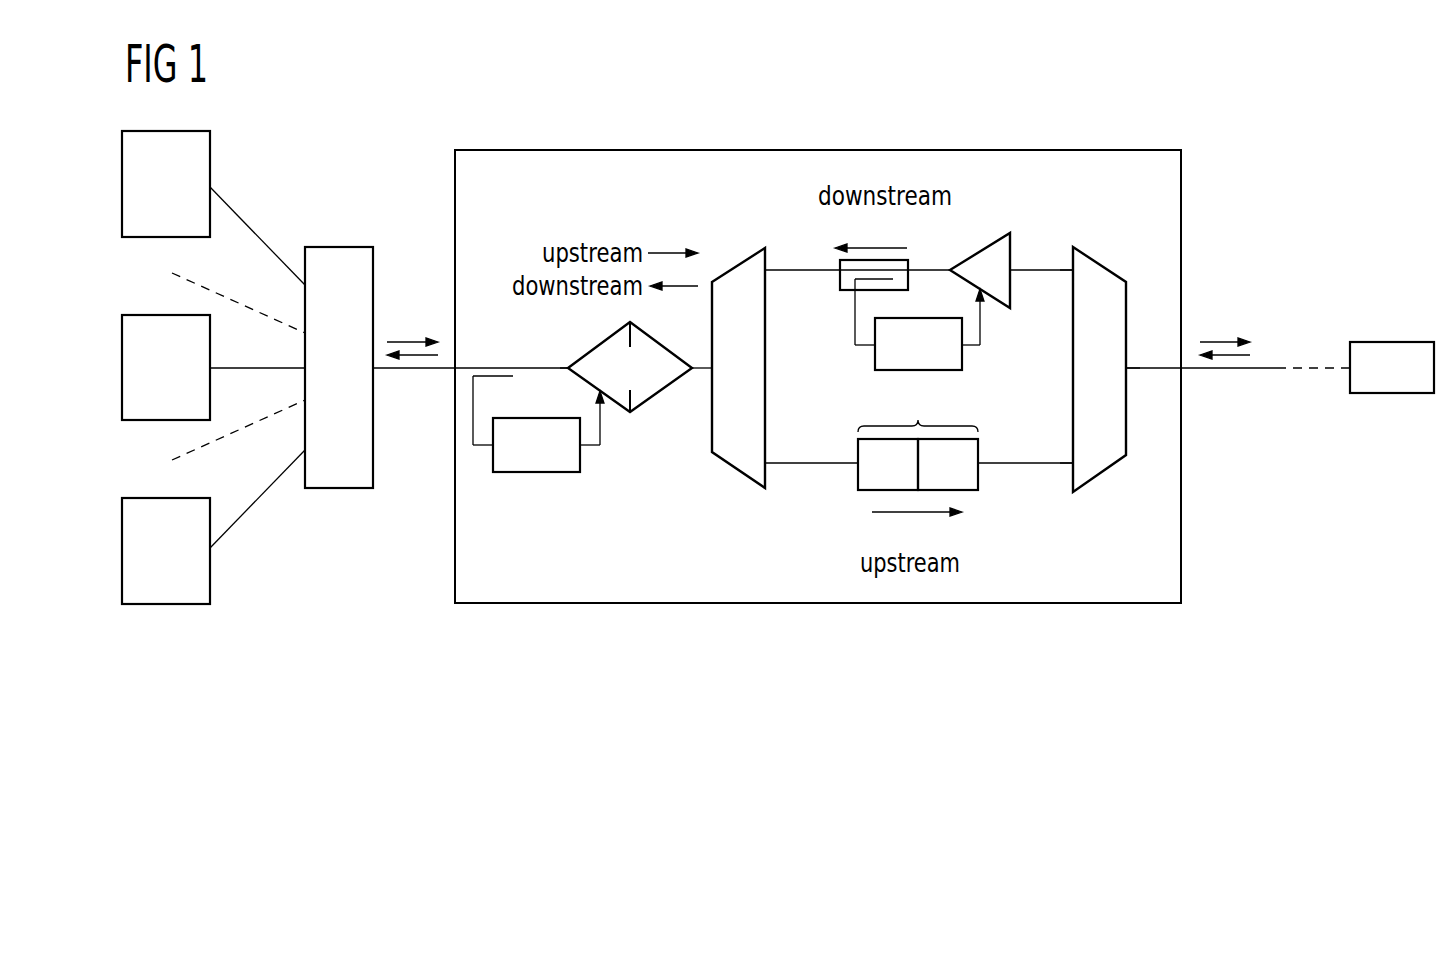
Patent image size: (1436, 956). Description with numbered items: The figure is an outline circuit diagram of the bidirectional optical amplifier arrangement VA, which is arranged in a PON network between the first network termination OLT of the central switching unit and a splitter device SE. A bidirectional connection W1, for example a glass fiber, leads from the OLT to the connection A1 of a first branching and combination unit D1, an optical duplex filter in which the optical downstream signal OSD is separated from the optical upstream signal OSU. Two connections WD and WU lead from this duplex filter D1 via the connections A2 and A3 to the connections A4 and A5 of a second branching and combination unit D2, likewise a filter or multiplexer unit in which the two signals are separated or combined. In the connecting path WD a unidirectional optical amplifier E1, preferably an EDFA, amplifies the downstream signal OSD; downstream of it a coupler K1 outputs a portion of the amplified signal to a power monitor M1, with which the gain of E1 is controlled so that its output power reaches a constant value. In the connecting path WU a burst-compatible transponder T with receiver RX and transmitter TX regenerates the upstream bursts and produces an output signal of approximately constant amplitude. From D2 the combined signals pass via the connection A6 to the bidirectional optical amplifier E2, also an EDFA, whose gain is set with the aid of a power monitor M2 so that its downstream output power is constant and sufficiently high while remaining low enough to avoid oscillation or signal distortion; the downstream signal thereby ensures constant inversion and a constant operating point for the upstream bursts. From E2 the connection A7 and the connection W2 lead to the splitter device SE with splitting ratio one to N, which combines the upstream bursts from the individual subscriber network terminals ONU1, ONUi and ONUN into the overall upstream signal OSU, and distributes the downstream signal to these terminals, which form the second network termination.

The bidirectional optical amplifier arrangement VA is at (818, 604).
The network terminal of first subscriber ONU1 is at (213, 208).
The network terminal of i-th subscriber ONUi is at (213, 367).
The network terminal of N-th subscriber ONUN is at (213, 527).
The splitter device SE is at (339, 367).
The connection to splitter device W2 is at (415, 369).
The power monitor M2 is at (538, 424).
The bidirectional optical amplifier E2 is at (630, 367).
The connection A7 is at (566, 360).
The connection A6 is at (708, 362).
The second branching and combination unit D2 is at (738, 368).
The connection A4 is at (770, 268).
The connection A5 is at (770, 460).
The optical downstream signal OSD is at (871, 233).
The coupler K1 is at (840, 282).
The power monitor M1 is at (919, 324).
The unidirectional optical amplifier E1 is at (980, 270).
The connection for downstream signal WD is at (1043, 272).
The connection A2 is at (1070, 266).
The transponder T is at (918, 404).
The receiver RX is at (888, 464).
The transmitter TX is at (948, 464).
The optical upstream signal OSU is at (917, 527).
The connection for upstream signal WU is at (1025, 465).
The connection A3 is at (1070, 458).
The first branching and combination unit D1 is at (1099, 369).
The connection A1 is at (1128, 364).
The bidirectional connection W1 is at (1221, 369).
The first network termination OLT is at (1355, 367).